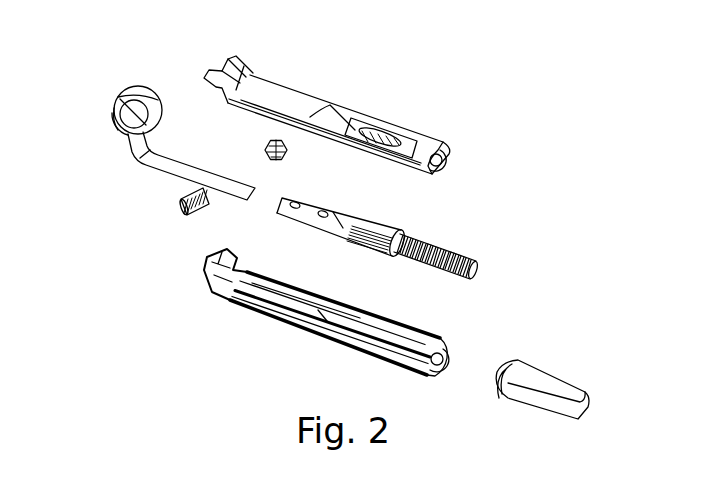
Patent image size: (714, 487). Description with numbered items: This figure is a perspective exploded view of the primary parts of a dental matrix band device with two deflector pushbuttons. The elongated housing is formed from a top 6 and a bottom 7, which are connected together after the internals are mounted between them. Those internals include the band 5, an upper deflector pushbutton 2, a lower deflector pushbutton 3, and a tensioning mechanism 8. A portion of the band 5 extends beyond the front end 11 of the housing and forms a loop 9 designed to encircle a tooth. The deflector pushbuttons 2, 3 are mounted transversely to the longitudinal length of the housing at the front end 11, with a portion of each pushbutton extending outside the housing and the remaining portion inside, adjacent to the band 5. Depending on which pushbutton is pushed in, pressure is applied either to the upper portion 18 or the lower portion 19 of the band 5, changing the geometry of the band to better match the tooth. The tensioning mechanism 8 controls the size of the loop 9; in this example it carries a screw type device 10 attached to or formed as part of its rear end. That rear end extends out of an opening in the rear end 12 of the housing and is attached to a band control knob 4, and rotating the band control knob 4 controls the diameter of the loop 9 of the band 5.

The upper deflector pushbutton 2 is at (178, 210).
The lower deflector pushbutton 3 is at (448, 147).
The band control knob 4 is at (588, 369).
The band 5 is at (135, 80).
The top 6 is at (297, 90).
The bottom 7 is at (343, 350).
The tensioning mechanism 8 is at (420, 233).
The loop 9 is at (135, 97).
The screw type device 10 is at (477, 270).
The front end 11 is at (250, 69).
The rear end 12 is at (438, 165).
The upper portion 18 is at (153, 93).
The lower portion 19 is at (112, 123).